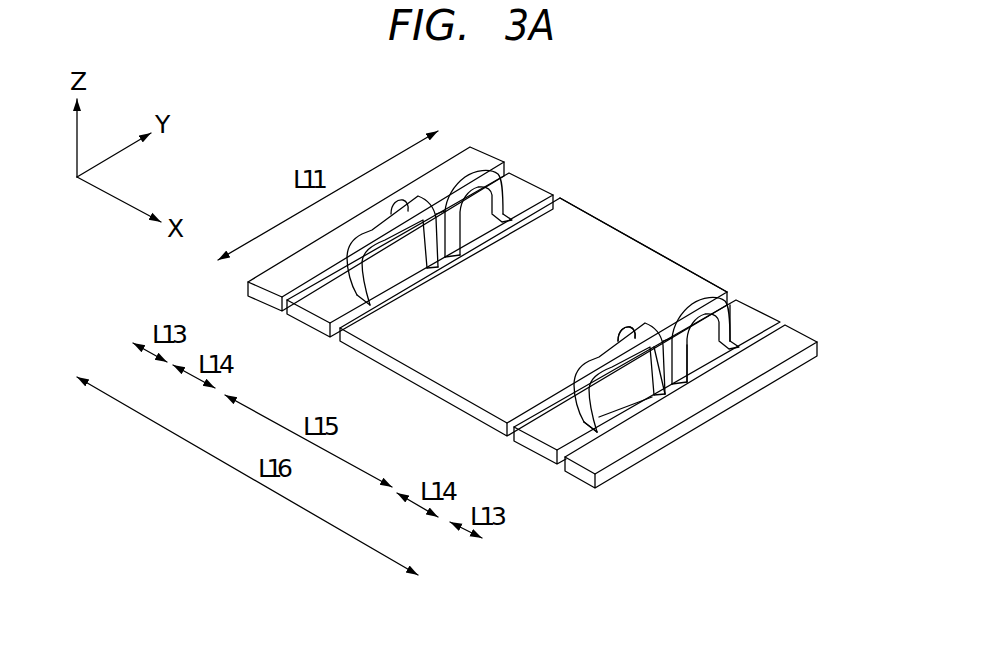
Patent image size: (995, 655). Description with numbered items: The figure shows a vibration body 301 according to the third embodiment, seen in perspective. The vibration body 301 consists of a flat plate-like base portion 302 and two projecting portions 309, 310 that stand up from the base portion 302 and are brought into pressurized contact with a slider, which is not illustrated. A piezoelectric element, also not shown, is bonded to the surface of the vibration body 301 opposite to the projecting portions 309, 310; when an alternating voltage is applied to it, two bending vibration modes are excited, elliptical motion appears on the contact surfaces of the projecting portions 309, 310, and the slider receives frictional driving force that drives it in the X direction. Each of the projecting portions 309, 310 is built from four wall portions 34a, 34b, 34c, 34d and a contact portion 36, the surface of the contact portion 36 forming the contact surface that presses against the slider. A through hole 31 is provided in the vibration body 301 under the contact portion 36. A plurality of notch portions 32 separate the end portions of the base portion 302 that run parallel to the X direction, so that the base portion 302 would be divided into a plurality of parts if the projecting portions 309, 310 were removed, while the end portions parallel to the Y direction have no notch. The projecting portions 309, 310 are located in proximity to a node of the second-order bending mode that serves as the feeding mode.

The vibration body 301 is at (693, 227).
The base portion 302 is at (440, 350).
The projecting portion 309 is at (450, 172).
The projecting portion 310 is at (635, 337).
The through hole 31 is at (630, 400).
The notch portion 32 is at (312, 316).
The wall portion 34a is at (580, 397).
The wall portion 34b is at (743, 358).
The wall portion 34c is at (670, 380).
The wall portion 34d is at (628, 327).
The contact portion 36 is at (683, 370).